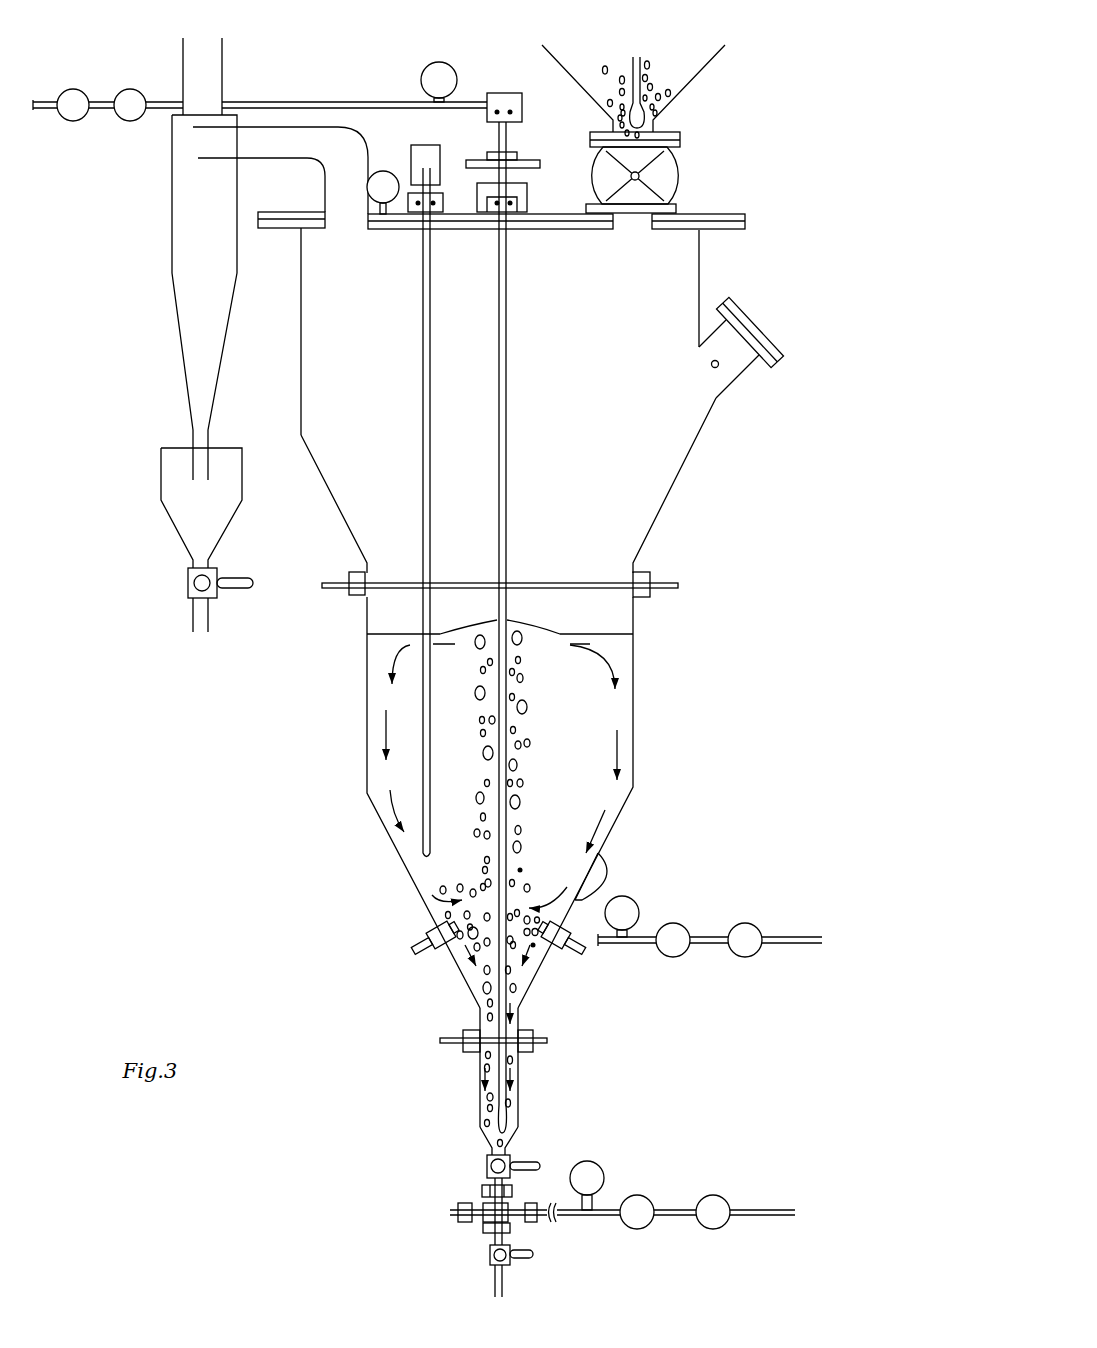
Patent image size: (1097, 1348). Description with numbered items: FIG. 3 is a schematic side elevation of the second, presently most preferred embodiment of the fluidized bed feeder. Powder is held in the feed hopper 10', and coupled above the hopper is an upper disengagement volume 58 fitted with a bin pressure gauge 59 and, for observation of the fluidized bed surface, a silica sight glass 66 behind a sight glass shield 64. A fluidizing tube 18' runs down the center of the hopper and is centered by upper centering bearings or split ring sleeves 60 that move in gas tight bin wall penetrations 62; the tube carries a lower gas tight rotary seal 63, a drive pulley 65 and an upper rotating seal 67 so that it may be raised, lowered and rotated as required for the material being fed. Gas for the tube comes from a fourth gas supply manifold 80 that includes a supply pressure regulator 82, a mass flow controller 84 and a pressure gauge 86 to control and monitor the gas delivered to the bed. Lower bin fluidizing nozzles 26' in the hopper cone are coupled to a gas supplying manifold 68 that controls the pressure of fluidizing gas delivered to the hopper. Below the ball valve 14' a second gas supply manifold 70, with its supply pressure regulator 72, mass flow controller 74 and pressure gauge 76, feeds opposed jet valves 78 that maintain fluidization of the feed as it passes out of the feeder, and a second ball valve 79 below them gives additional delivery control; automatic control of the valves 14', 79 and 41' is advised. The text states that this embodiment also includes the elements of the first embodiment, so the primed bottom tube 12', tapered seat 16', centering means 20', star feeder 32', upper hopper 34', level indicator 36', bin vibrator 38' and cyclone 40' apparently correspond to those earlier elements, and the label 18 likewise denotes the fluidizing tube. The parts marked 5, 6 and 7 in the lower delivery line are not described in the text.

The product outlet line 5 is at (516, 1265).
The coupling 6 is at (474, 1188).
The gas supply line 7 is at (479, 1222).
The feed hopper 10' is at (500, 659).
The lower tube section 12' is at (528, 1067).
The ball valve 14' is at (532, 1147).
The outlet nozzle 16' is at (458, 1123).
The fluidizing tube 18 is at (652, 102).
The fluidizing tube 18' is at (508, 889).
The flange 20' is at (524, 1026).
The lower bin fluidizing nozzles 26' is at (475, 938).
The feed valve 32' is at (666, 180).
The feed funnel 34' is at (652, 88).
The thermocouple probe 36' is at (410, 486).
The baffle 38' is at (618, 867).
The cyclone separator 40' is at (171, 335).
The valve 41' is at (233, 571).
The disengagement volume 58 is at (679, 483).
The bin pressure gauge 59 is at (385, 217).
The upper centering bearings 60 is at (326, 589).
The gas tight bin wall penetrations 62 is at (352, 571).
The lower gas tight rotary seal 63 is at (516, 217).
The sight glass shield 64 is at (714, 369).
The drive pulley 65 is at (529, 158).
The silica sight glass 66 is at (745, 317).
The upper rotating seal 67 is at (525, 109).
The gas supplying manifold 68 is at (769, 931).
The second gas supply manifold 70 is at (672, 1204).
The supply pressure regulator 72 is at (703, 1229).
The mass flow controller 74 is at (622, 1229).
The pressure gauge 76 is at (600, 1162).
The opposed jet valves 78 is at (503, 1220).
The second ball valve 79 is at (489, 1265).
The fourth gas supply manifold 80 is at (271, 98).
The supply pressure regulator 82 is at (78, 88).
The mass flow controller 84 is at (136, 88).
The pressure gauge 86 is at (447, 61).